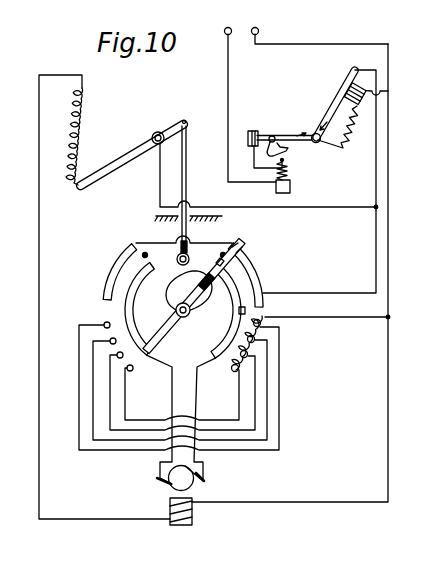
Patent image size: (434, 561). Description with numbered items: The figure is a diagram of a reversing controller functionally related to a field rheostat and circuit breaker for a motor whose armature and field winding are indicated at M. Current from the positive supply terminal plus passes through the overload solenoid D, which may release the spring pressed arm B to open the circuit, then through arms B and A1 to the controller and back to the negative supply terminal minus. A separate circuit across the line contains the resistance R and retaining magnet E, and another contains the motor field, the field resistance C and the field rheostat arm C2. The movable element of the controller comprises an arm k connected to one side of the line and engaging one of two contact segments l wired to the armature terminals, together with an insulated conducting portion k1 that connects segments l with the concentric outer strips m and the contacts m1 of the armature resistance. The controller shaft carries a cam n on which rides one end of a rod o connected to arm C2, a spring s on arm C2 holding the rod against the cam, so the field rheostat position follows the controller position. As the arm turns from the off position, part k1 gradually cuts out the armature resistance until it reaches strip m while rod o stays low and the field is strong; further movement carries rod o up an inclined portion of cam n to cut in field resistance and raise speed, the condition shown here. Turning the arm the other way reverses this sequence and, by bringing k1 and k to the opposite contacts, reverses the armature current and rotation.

The field resistance C is at (76, 136).
The field rheostat arm C2 is at (100, 170).
The spring s is at (155, 134).
The rod o is at (208, 168).
The spring pressed arm A1 is at (342, 97).
The spring pressed arm B is at (280, 141).
The retaining magnet E is at (365, 104).
The resistance R is at (338, 132).
The overload solenoid D is at (289, 174).
The concentric outer strips m is at (115, 272).
The contact segments l is at (125, 311).
The cam n is at (187, 280).
The arm k is at (158, 341).
The insulated conducting portion k1 is at (243, 249).
The contacts of the controlling resistance m1 is at (294, 350).
The motor armature and field winding M is at (132, 508).
The positive supply terminal plus is at (242, 103).
The negative supply terminal minus is at (268, 30).